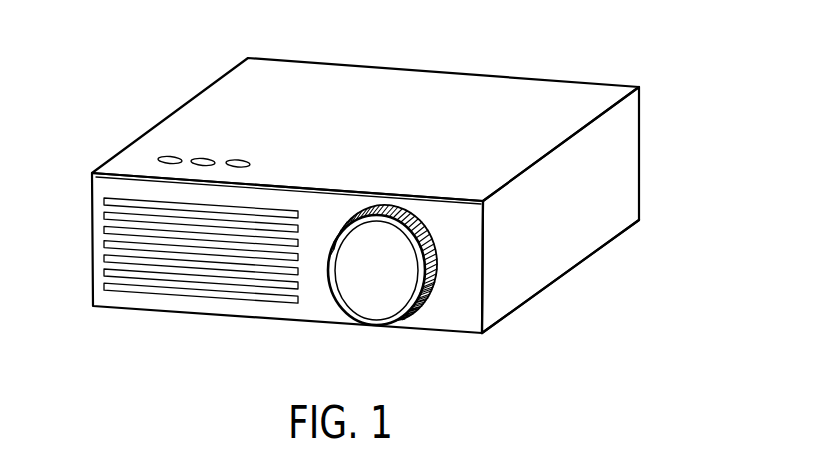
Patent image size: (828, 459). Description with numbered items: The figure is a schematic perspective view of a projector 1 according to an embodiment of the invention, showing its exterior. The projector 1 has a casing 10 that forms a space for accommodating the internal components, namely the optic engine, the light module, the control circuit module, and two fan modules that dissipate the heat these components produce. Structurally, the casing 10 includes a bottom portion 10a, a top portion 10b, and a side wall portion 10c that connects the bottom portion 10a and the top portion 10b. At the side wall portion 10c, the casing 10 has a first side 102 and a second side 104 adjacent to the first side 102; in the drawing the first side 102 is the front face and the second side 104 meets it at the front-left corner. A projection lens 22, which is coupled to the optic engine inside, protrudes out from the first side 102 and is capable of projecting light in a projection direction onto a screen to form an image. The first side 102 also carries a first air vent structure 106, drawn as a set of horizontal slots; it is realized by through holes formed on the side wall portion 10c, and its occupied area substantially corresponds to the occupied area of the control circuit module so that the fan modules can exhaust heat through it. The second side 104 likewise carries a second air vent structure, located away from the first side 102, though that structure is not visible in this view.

The projector 1 is at (139, 54).
The casing 10 is at (697, 254).
The bottom portion 10a is at (528, 309).
The top portion 10b is at (550, 112).
The side wall portion 10c is at (567, 250).
The first side 102 is at (318, 307).
The second side 104 is at (106, 148).
The first air vent structure 106 is at (177, 277).
The projection lens 22 is at (380, 297).